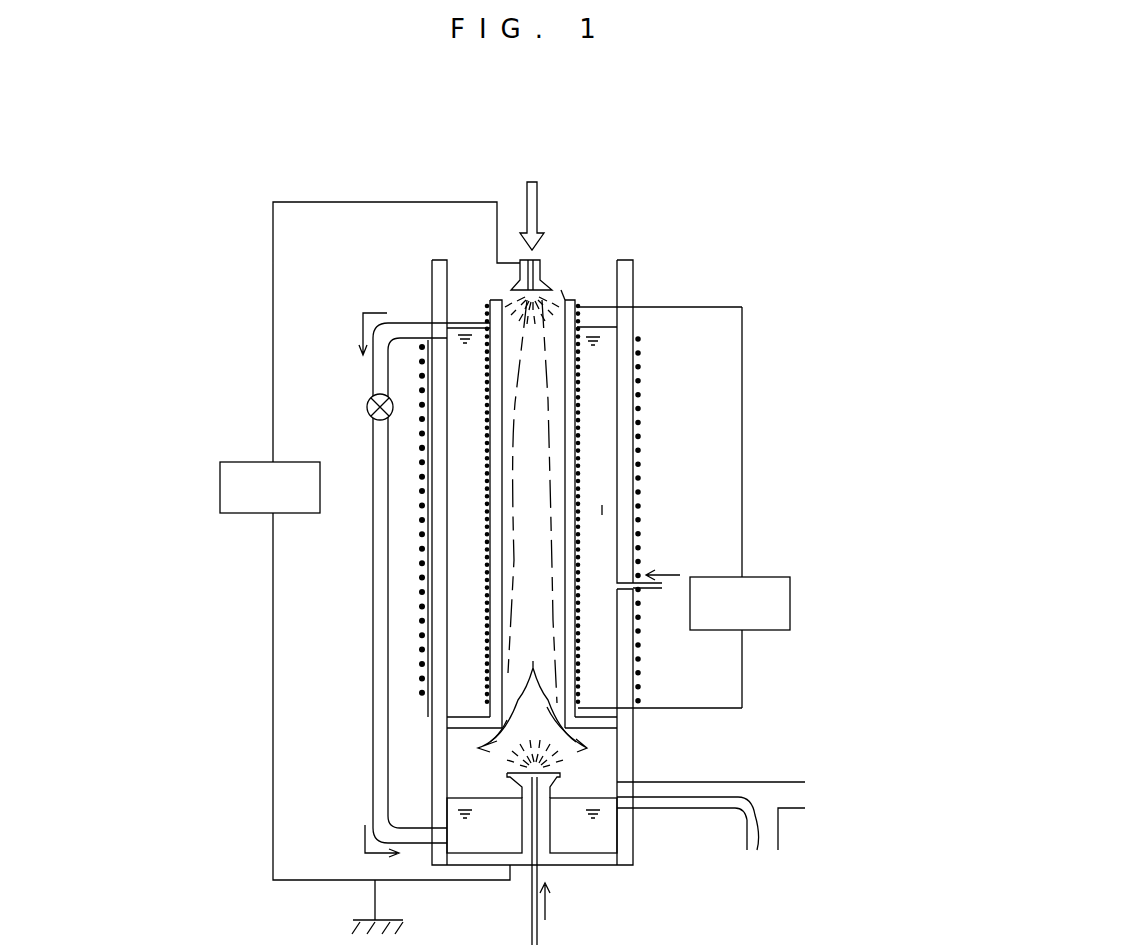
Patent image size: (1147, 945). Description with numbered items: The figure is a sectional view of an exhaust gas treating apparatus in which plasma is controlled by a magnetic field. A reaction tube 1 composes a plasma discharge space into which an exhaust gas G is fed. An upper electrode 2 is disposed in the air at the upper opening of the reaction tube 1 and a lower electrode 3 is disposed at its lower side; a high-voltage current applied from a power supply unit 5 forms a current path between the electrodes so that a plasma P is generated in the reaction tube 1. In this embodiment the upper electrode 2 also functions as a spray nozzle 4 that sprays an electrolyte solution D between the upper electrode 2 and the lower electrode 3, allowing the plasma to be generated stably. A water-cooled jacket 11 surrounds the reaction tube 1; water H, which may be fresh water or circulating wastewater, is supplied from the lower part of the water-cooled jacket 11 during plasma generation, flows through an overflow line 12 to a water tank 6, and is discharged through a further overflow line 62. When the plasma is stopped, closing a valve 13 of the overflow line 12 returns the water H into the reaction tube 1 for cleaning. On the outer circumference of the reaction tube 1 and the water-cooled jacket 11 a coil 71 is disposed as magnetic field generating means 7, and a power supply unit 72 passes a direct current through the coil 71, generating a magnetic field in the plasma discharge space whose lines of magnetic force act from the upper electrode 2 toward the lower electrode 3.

The reaction tube 1 is at (577, 367).
The upper electrode 2 is at (517, 285).
The spray nozzle 4 is at (532, 292).
The lower electrode 3 is at (540, 787).
The power supply unit 5 is at (237, 470).
The water tank 6 is at (470, 833).
The magnetic field generating means 7 is at (790, 548).
The water-cooled jacket 11 is at (605, 397).
The overflow line 12 is at (375, 445).
The valve 13 is at (369, 397).
The overflow line 62 is at (755, 782).
The coil 71 is at (638, 338).
The power supply unit 72 is at (706, 588).
The exhaust gas G is at (540, 173).
The electrolyte solution D is at (560, 293).
The plasma P is at (552, 467).
The water H is at (600, 510).